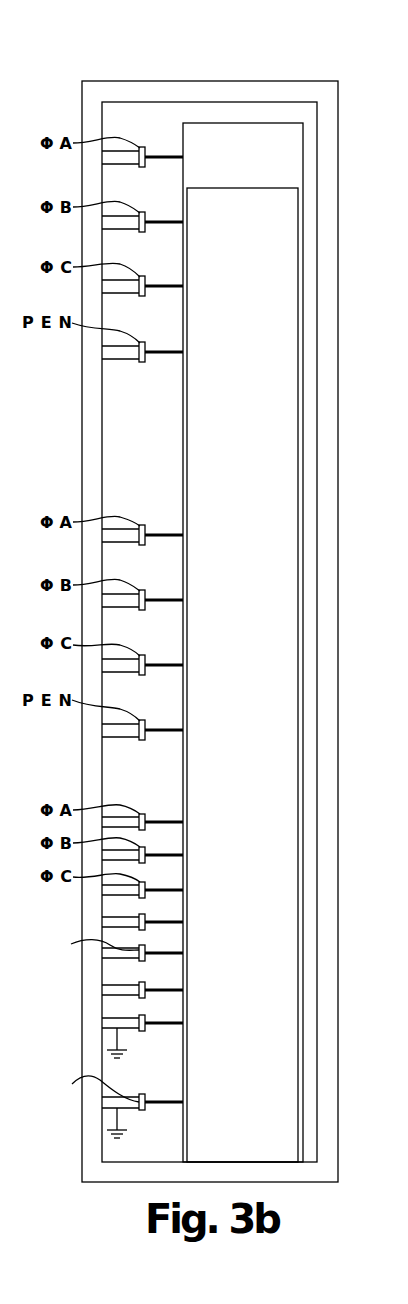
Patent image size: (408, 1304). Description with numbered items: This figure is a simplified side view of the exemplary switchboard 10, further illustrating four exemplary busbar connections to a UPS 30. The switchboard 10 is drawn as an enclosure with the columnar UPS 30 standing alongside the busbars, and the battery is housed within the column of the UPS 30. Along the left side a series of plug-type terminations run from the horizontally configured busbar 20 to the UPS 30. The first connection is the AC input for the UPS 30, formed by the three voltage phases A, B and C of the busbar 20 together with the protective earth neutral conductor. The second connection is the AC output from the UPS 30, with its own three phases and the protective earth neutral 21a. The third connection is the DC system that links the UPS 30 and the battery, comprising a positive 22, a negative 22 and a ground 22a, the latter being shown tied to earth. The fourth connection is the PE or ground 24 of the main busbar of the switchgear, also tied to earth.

The switchboard 10 is at (86, 42).
The busbar 20 is at (303, 169).
The UPS 30 is at (253, 721).
The PEN of AC output 21a is at (143, 918).
The DC system positive and negative 22 is at (143, 952).
The DC system ground 22a is at (143, 1020).
The PE or ground of main busbar 24 is at (143, 1098).